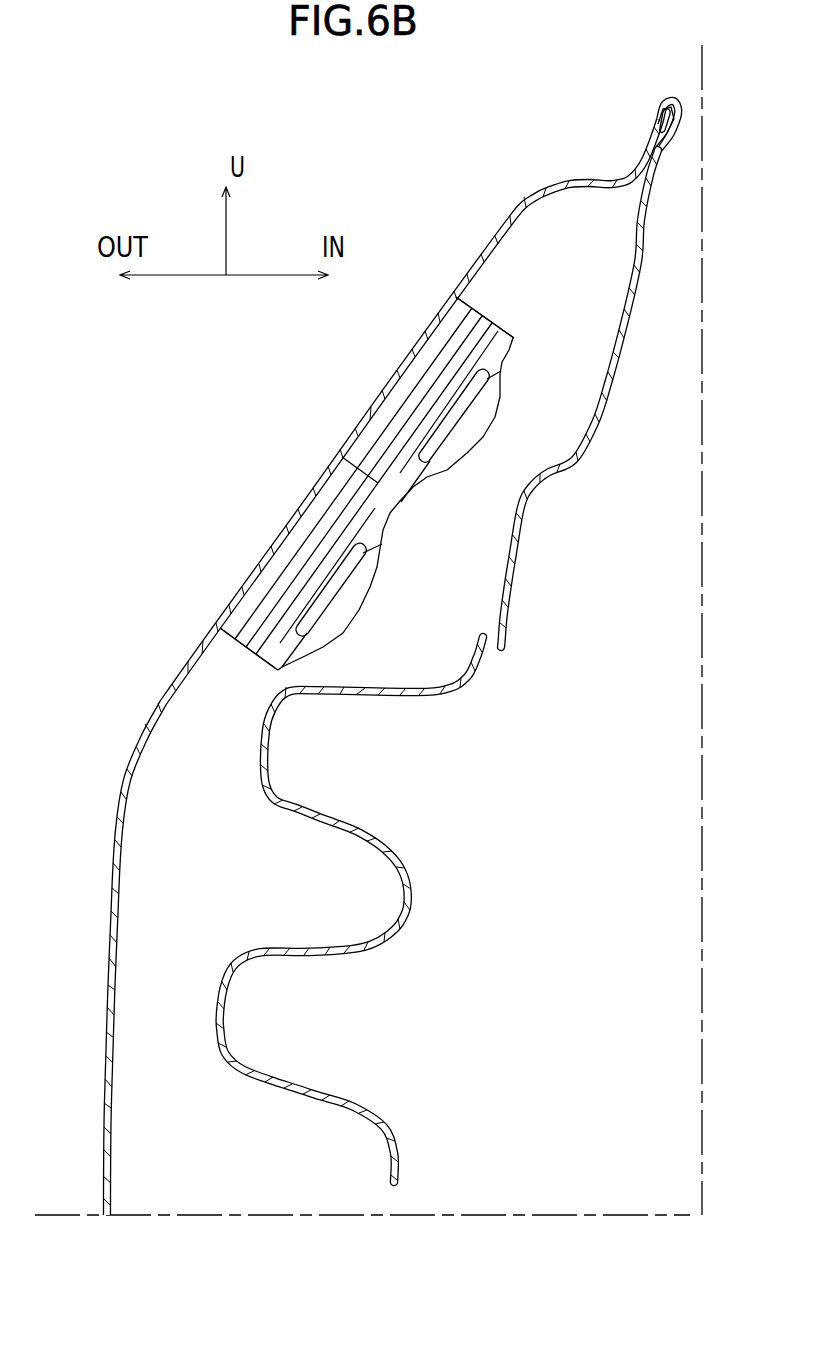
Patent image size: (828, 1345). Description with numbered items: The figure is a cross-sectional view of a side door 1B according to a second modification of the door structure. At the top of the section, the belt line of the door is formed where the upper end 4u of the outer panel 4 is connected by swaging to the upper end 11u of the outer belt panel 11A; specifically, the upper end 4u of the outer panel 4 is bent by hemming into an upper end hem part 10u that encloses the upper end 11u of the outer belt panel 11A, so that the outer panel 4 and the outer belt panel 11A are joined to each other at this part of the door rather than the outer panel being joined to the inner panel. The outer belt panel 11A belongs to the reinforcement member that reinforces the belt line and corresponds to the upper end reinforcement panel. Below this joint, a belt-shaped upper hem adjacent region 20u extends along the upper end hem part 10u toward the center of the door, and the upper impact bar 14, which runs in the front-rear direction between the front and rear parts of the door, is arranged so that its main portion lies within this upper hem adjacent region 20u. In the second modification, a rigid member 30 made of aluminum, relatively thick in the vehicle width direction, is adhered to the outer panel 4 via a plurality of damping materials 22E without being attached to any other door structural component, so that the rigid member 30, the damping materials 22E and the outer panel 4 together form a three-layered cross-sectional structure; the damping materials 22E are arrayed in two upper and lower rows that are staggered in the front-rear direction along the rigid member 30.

The side door 1B is at (348, 167).
The outer panel 4 is at (479, 240).
The upper end of the outer panel 4u is at (671, 100).
The upper end hem part 10u is at (634, 106).
The upper end of the outer belt panel 11u is at (657, 118).
The outer belt panel 11A is at (578, 476).
The upper impact bar 14 is at (416, 920).
The upper hem adjacent region 20u is at (244, 462).
The rigid member 30 is at (413, 511).
The damping materials 22E is at (472, 303).